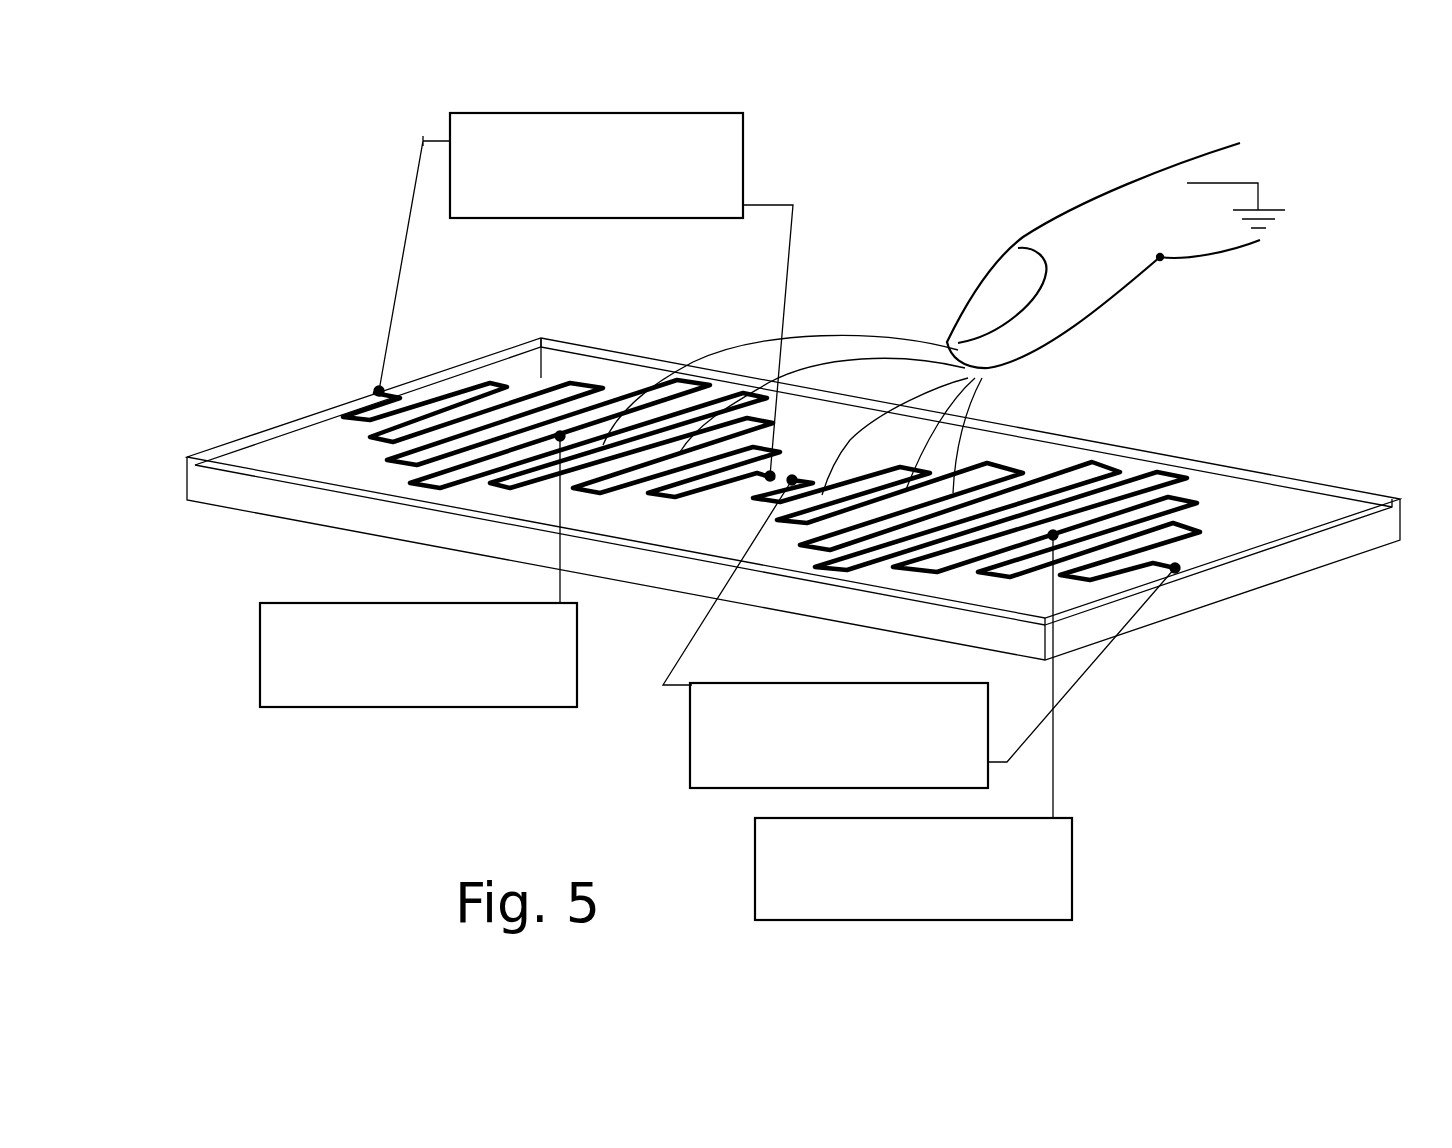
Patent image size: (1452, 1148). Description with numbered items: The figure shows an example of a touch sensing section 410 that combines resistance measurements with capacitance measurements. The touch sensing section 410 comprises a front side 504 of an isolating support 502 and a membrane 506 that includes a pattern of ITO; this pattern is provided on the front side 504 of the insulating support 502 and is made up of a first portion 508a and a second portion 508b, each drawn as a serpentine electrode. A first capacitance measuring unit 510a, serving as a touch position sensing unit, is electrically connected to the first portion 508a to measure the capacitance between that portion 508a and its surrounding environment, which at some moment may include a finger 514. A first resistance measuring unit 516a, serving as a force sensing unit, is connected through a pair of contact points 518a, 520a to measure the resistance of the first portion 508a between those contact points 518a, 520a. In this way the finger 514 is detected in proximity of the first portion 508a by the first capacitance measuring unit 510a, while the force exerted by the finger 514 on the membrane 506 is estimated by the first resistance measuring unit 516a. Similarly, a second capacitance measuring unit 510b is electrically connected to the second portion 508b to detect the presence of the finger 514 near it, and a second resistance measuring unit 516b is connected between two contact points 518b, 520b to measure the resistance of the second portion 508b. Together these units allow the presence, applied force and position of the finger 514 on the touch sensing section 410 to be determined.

The touch sensing section 410 is at (346, 193).
The isolating support 502 is at (1148, 608).
The front side 504 is at (303, 487).
The membrane 506 is at (1255, 550).
The first portion of the ITO pattern 508a is at (577, 385).
The second portion of the ITO pattern 508b is at (1170, 477).
The first capacitance measuring unit 510a is at (430, 707).
The second capacitance measuring unit 510b is at (1072, 858).
The finger 514 is at (1128, 298).
The first resistance measuring unit 516a is at (745, 150).
The second resistance measuring unit 516b is at (743, 788).
The contact point 518a is at (378, 391).
The contact point 518b is at (795, 478).
The contact point 520a is at (765, 482).
The contact point 520b is at (1178, 572).